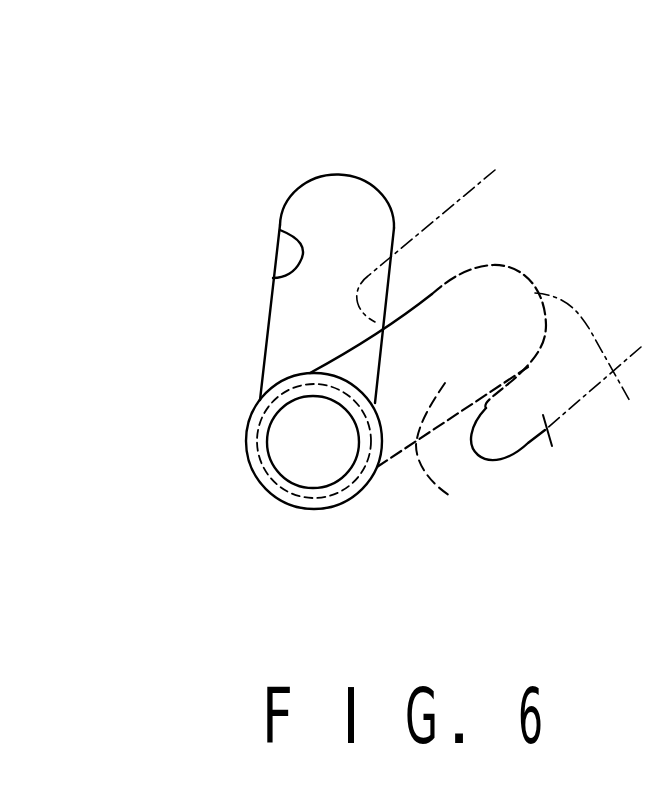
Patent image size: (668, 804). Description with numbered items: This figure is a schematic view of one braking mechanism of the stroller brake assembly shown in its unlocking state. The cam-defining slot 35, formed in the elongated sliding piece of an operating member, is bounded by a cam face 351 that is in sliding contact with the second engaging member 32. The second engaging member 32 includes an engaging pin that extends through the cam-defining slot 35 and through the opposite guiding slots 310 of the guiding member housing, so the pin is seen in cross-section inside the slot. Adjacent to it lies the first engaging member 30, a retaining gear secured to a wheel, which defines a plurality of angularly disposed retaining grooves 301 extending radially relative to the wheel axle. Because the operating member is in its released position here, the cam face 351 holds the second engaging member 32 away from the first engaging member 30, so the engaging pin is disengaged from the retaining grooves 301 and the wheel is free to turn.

The first engaging member 30 is at (546, 432).
The retaining grooves 301 is at (512, 311).
The guiding slots 310 is at (466, 455).
The second engaging member 32 is at (293, 450).
The cam-defining slot 35 is at (322, 173).
The cam face 351 is at (273, 278).